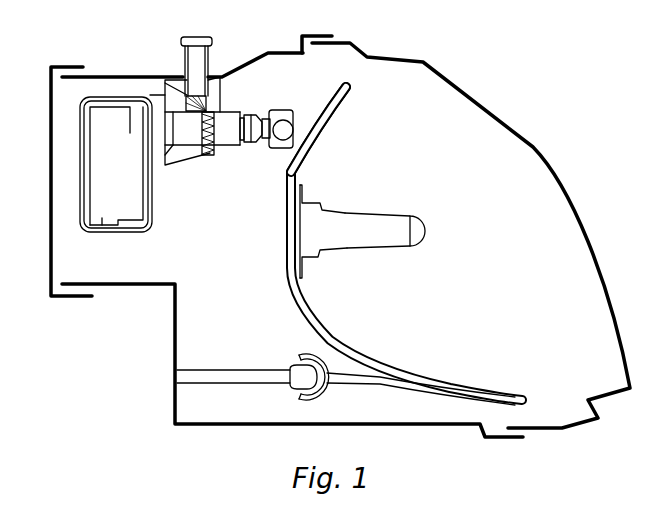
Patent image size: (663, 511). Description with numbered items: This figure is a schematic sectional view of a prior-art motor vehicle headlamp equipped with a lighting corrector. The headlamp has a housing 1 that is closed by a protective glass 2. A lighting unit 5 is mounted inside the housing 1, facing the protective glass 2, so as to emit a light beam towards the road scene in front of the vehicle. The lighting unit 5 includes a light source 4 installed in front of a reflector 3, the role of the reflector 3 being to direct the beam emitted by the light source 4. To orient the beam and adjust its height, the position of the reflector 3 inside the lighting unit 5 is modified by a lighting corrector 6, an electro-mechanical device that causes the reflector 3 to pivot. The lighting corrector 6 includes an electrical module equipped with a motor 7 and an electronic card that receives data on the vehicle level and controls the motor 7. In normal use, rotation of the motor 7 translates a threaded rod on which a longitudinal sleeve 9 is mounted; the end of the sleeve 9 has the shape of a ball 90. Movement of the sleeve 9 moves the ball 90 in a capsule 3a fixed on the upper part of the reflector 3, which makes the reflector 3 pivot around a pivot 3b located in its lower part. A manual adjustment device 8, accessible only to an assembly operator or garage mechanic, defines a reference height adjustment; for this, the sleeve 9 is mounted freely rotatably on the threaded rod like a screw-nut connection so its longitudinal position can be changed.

The housing 1 is at (114, 75).
The protective glass 2 is at (502, 117).
The reflector 3 is at (322, 325).
The capsule 3a is at (318, 121).
The pivot 3b is at (289, 367).
The light source 4 is at (383, 250).
The lighting unit 5 is at (342, 200).
The lighting corrector 6 is at (160, 212).
The motor 7 is at (103, 226).
The manual adjustment device 8 is at (231, 158).
The longitudinal sleeve 9 is at (243, 116).
The ball 90 is at (288, 110).